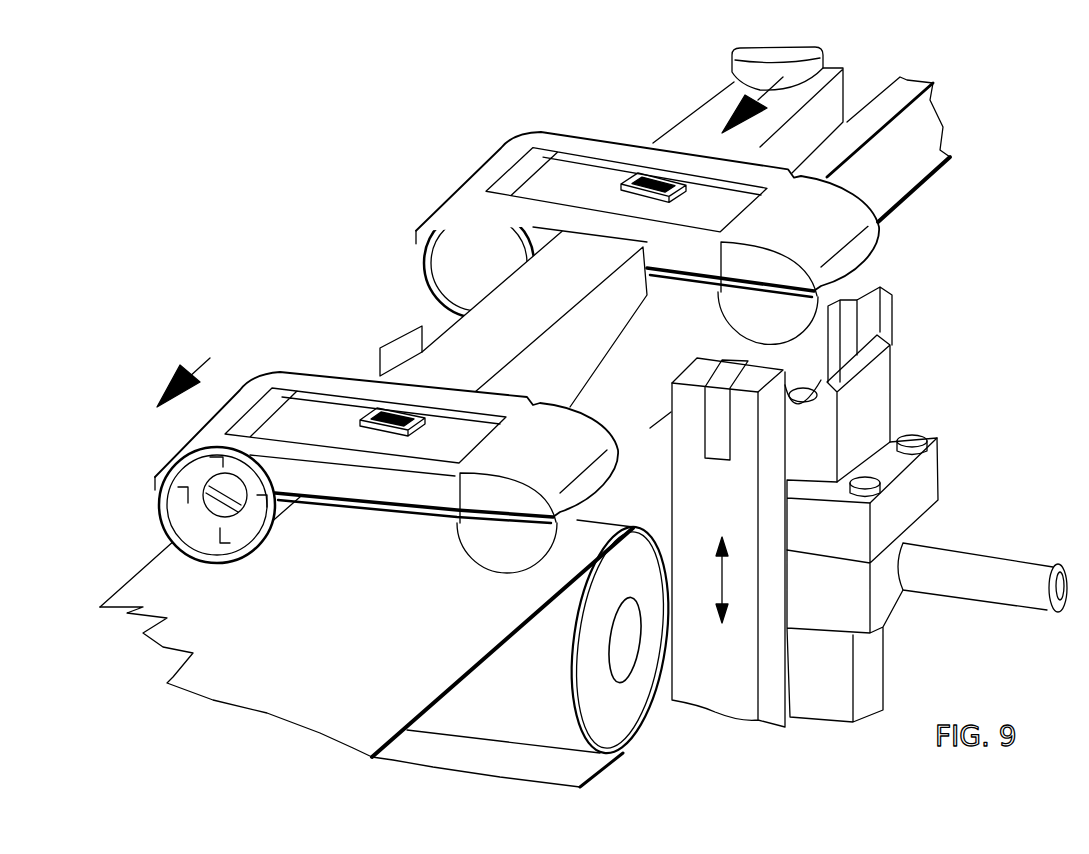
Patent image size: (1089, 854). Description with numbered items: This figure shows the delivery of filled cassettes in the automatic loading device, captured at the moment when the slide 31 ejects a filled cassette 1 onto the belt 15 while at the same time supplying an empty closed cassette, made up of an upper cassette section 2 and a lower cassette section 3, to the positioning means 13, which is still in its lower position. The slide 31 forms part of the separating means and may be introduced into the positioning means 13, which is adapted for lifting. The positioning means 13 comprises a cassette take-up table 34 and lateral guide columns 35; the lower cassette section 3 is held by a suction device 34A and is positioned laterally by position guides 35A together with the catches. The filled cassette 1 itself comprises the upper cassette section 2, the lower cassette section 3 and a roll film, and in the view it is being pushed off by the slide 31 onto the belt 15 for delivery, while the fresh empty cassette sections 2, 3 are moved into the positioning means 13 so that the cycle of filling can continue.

The filled cassette 1 is at (288, 360).
The upper cassette section 2 is at (858, 211).
The lower cassette section 3 is at (867, 254).
The positioning means 13 is at (900, 670).
The belt 15 is at (380, 717).
The slide 31 is at (445, 347).
The cassette take-up table 34 is at (878, 385).
The suction device 34A is at (992, 568).
The lateral guide column 35 is at (723, 693).
The position guide 35A is at (735, 358).